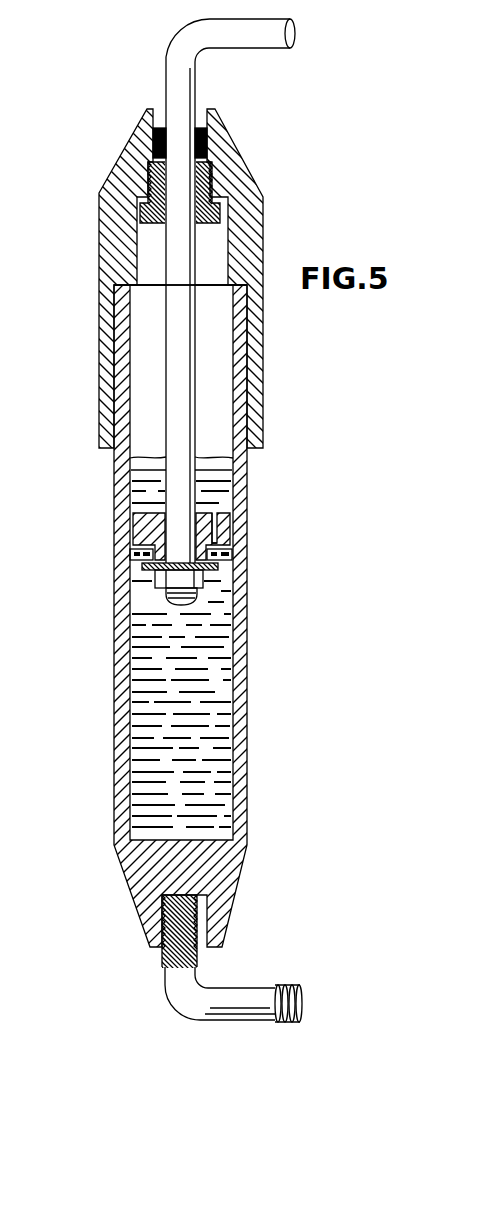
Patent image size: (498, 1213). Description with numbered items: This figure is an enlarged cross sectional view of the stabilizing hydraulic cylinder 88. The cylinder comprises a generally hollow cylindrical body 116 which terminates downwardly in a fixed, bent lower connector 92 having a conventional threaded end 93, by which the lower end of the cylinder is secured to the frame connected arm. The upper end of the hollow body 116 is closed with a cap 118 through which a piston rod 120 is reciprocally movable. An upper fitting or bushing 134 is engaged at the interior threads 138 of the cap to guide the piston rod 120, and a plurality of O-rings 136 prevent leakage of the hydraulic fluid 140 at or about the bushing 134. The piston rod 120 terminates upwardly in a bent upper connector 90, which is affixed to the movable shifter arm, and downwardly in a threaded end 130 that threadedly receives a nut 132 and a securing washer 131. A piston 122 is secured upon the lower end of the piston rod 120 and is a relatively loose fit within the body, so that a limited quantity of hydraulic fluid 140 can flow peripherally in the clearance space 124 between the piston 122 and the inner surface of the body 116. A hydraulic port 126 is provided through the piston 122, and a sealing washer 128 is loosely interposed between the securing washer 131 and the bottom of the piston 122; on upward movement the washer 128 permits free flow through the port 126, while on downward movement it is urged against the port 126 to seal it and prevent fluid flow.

The hydraulic cylinder 88 is at (248, 698).
The bent upper connector 90 is at (193, 76).
The bent lower connector 92 is at (230, 1000).
The threaded end 93 is at (290, 1022).
The hollow cylindrical body 116 is at (240, 489).
The cap 118 is at (250, 226).
The piston rod 120 is at (178, 396).
The piston 122 is at (142, 528).
The clearance space 124 is at (232, 533).
The hydraulic port 126 is at (215, 522).
The sealing washer 128 is at (228, 560).
The threaded end 130 is at (177, 607).
The securing washer 131 is at (150, 572).
The nut 132 is at (203, 577).
The upper fitting or bushing 134 is at (212, 184).
The O-rings 136 is at (205, 139).
The interior threads 138 is at (208, 163).
The hydraulic fluid 140 is at (205, 794).